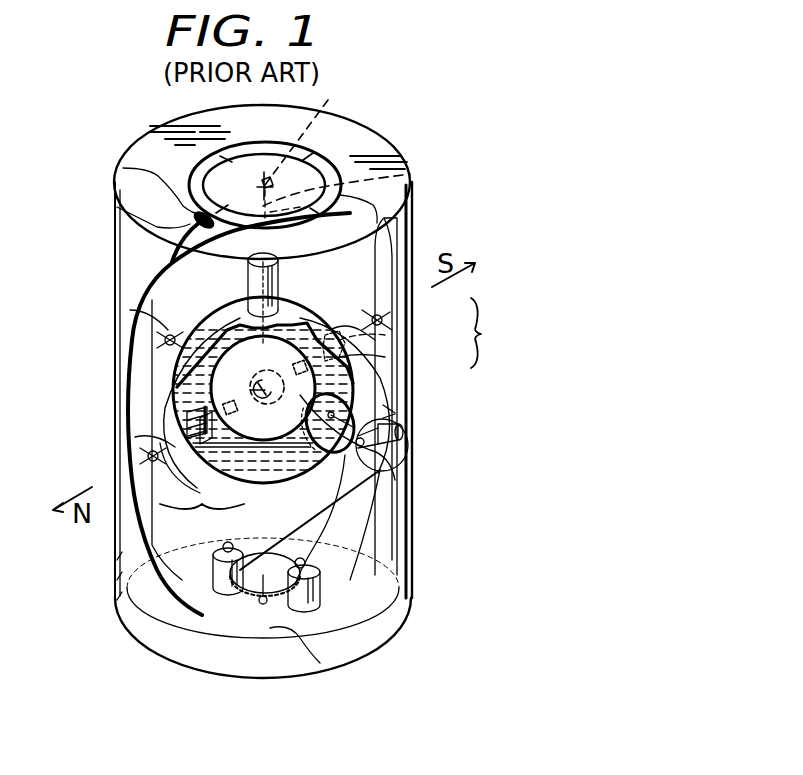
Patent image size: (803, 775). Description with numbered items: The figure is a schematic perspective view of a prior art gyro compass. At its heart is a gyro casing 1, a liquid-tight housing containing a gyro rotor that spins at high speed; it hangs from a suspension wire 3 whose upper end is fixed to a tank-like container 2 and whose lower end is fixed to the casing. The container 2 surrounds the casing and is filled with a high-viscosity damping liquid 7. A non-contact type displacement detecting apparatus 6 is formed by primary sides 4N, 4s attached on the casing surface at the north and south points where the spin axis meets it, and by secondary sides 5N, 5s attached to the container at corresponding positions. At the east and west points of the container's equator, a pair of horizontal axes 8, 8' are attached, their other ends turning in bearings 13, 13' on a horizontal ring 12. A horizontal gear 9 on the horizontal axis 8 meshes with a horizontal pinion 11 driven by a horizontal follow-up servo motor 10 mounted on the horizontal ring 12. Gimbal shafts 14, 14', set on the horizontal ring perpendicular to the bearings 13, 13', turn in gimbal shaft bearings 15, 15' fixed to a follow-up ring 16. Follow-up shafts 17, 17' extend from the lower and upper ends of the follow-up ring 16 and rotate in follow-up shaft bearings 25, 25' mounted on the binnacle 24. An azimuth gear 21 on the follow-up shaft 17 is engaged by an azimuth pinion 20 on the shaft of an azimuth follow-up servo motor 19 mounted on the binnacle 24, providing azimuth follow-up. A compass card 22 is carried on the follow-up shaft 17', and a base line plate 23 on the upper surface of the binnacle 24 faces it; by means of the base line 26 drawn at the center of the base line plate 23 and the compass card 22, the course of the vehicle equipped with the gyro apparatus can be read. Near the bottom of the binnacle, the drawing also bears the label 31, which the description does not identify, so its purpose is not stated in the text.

The gyro casing 1 is at (172, 395).
The container 2 is at (165, 341).
The suspension wire 3 is at (250, 323).
The primary side 4s is at (384, 356).
The secondary side 5s is at (410, 333).
The primary side 4N is at (221, 459).
The secondary side 5N is at (195, 448).
The non-contact type displacement detecting apparatus 6 is at (510, 344).
The liquid 7 is at (281, 480).
The horizontal axis 8 is at (329, 439).
The horizontal axis 8' is at (118, 295).
The horizontal gear 9 is at (407, 513).
The horizontal follow-up servo motor 10 is at (409, 450).
The horizontal pinion 11 is at (393, 417).
The horizontal ring 12 is at (407, 378).
The bearing 13 is at (393, 455).
The bearing 13' is at (178, 311).
The gimbal shaft 14 is at (112, 463).
The gimbal shaft 14' is at (334, 305).
The gimbal shaft bearing 15 is at (116, 428).
The gimbal shaft bearing 15' is at (364, 296).
The follow-up ring 16 is at (378, 244).
The follow-up shaft 17 is at (323, 671).
The follow-up shaft 17' is at (372, 166).
The azimuth follow-up servo motor 19 is at (327, 597).
The azimuth pinion 20 is at (394, 574).
The azimuth gear 21 is at (248, 580).
The compass card 22 is at (331, 152).
The base line plate 23 is at (123, 168).
The binnacle 24 is at (412, 611).
The follow-up shaft bearing 25 is at (283, 645).
The follow-up shaft bearing 25' is at (317, 148).
The base line 26 is at (117, 207).
The base plate 31 is at (175, 640).